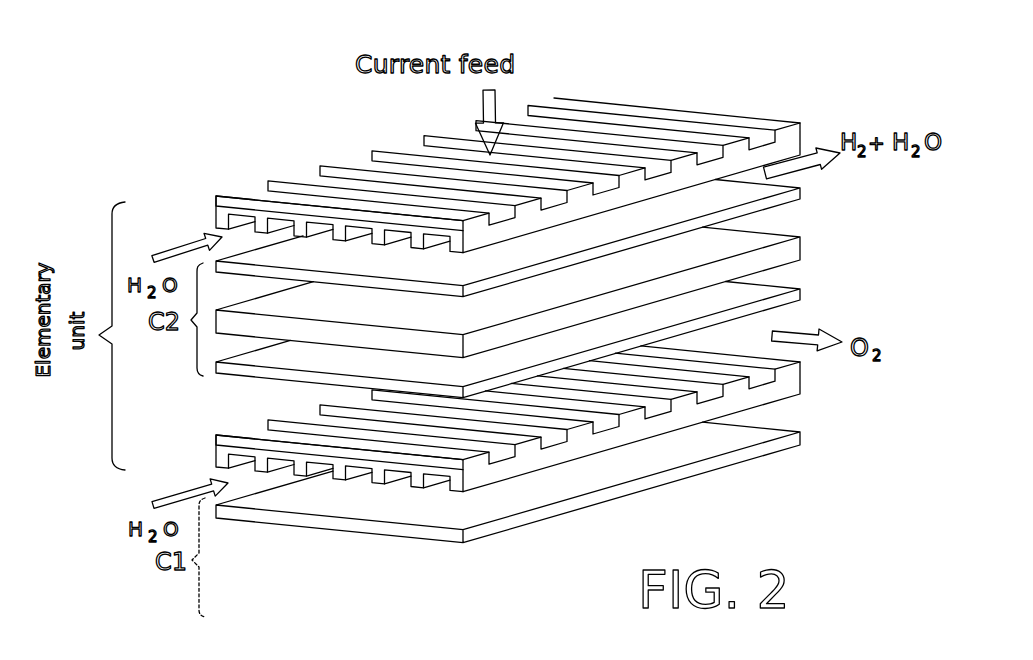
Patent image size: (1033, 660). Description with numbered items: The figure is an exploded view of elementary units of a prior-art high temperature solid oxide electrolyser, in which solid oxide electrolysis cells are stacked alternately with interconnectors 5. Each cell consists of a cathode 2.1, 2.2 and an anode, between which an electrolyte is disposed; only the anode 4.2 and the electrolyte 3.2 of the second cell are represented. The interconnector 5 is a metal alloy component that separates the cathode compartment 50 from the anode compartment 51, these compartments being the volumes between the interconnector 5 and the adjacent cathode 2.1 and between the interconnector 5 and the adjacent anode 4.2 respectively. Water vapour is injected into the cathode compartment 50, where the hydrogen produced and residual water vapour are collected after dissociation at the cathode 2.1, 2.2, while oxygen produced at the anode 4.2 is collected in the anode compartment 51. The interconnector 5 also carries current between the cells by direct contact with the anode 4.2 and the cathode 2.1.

The interconnector 5 is at (466, 295).
The cathode compartment 50 is at (236, 236).
The anode compartment 51 is at (262, 404).
The cathode 2.2 is at (800, 188).
The electrolyte 3.2 is at (800, 237).
The anode 4.2 is at (800, 289).
The cathode 2.1 is at (800, 432).